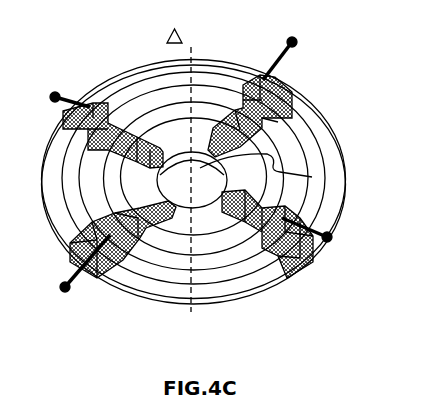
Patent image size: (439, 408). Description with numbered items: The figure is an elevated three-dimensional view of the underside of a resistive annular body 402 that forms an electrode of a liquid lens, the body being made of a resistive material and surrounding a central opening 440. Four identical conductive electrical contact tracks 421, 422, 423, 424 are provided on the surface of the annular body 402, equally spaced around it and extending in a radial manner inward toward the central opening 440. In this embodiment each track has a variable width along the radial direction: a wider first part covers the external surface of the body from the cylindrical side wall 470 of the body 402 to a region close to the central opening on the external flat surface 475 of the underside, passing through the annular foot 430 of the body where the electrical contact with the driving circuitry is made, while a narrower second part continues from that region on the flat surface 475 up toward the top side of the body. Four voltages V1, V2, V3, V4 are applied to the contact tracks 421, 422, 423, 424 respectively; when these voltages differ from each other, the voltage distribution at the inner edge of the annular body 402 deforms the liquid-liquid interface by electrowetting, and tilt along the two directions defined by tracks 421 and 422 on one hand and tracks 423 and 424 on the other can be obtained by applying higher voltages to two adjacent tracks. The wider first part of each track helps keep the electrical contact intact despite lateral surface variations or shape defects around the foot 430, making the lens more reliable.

The resistive annular body 402 is at (317, 103).
The flat surface of the underside of the body 475 is at (263, 193).
The annular foot 430 is at (292, 283).
The cylindrical side wall 470 is at (213, 290).
The central opening 440 is at (210, 178).
The conductive electrical contact track 421 is at (234, 128).
The conductive electrical contact track 422 is at (131, 228).
The conductive electrical contact track 423 is at (245, 300).
The conductive electrical contact track 424 is at (150, 150).
The voltage V1 is at (296, 47).
The voltage V2 is at (84, 278).
The voltage V3 is at (323, 235).
The voltage V4 is at (66, 81).